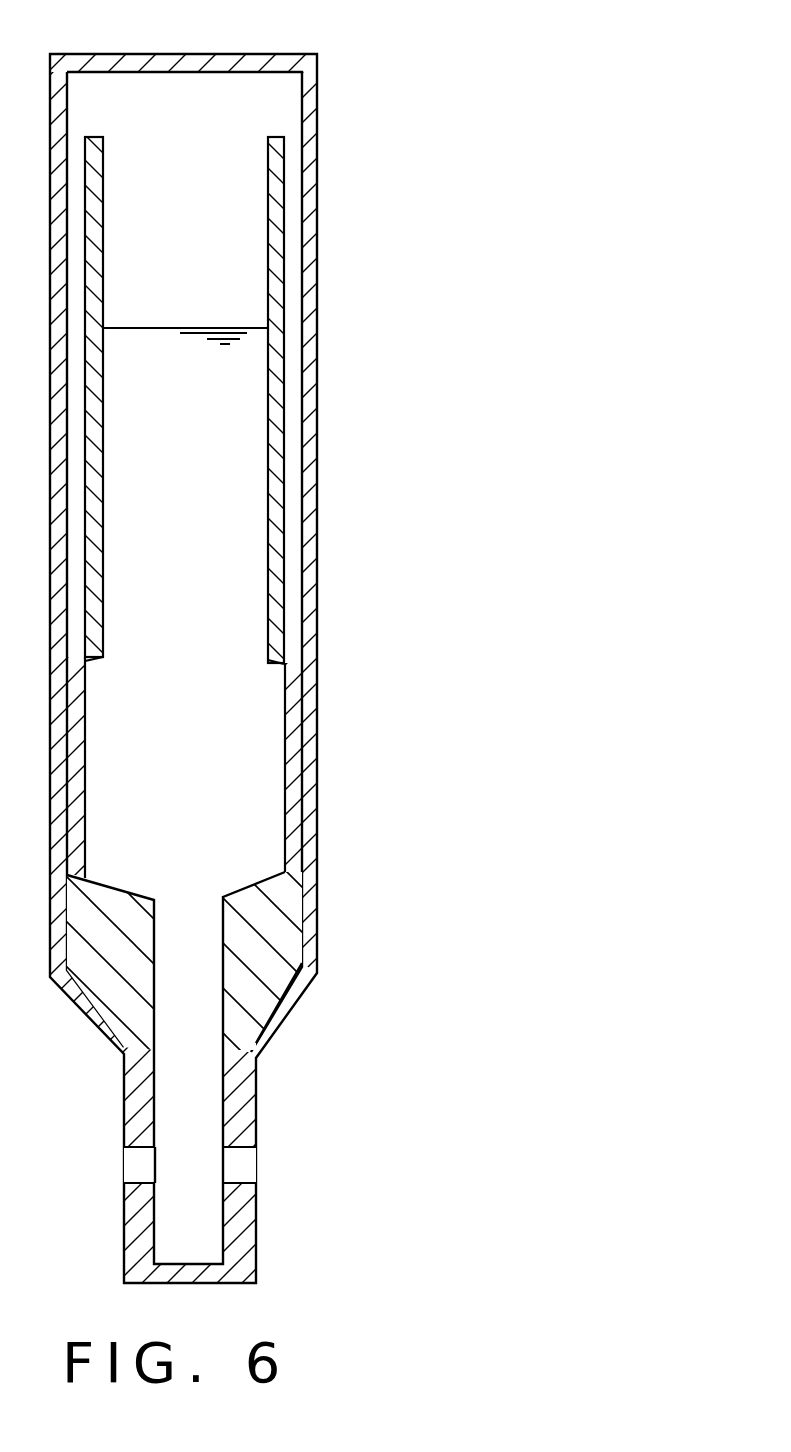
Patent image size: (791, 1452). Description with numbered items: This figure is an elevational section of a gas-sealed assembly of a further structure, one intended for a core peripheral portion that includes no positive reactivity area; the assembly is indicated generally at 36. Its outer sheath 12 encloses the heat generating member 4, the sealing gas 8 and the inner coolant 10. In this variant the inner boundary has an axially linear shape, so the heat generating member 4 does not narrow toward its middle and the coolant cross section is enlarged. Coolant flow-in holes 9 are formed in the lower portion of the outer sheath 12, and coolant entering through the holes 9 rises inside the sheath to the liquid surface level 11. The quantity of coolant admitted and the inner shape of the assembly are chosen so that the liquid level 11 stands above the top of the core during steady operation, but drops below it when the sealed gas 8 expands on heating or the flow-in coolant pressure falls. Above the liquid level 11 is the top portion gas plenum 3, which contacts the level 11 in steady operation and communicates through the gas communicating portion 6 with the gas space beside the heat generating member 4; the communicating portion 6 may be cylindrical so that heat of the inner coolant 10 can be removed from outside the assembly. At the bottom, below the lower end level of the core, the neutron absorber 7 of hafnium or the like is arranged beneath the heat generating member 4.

The sample vessel assembly 36 is at (252, 643).
The top portion gas plenum 3 is at (253, 125).
The sealing gas 8 is at (237, 240).
The liquid surface level 11 is at (245, 326).
The gas communicating portion 6 is at (290, 433).
The heat generating member 4 is at (280, 497).
The outer sheath 12 is at (318, 698).
The inner coolant 10 is at (253, 825).
The neutron absorber 7 is at (278, 937).
The coolant flow-in holes 9 is at (235, 1165).